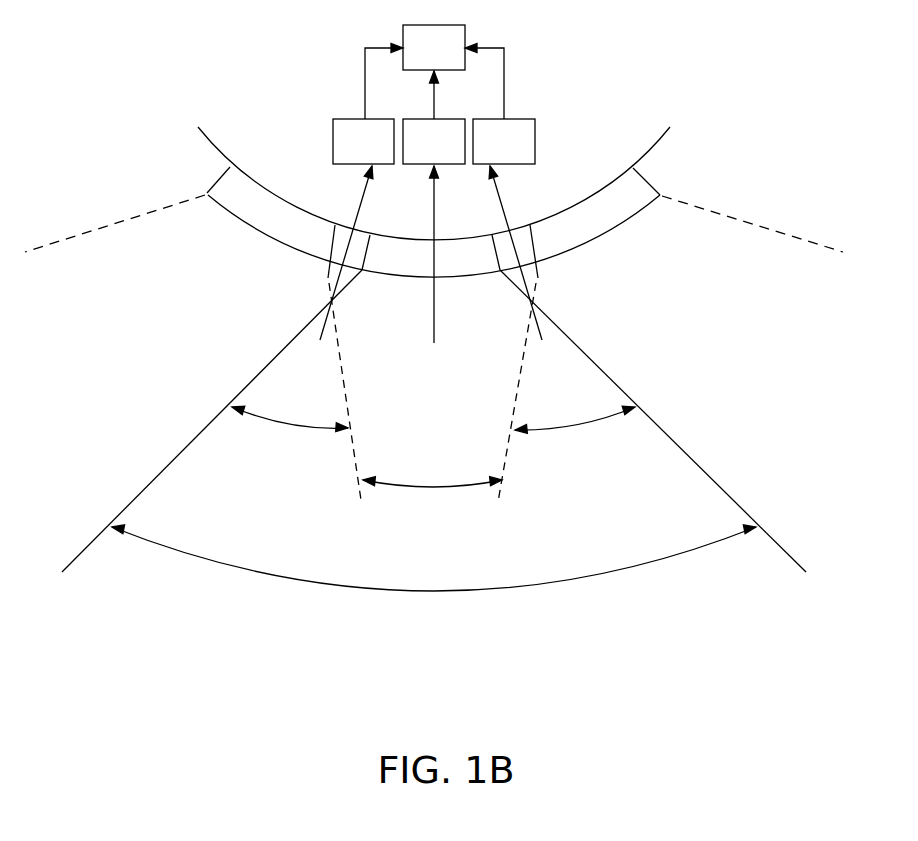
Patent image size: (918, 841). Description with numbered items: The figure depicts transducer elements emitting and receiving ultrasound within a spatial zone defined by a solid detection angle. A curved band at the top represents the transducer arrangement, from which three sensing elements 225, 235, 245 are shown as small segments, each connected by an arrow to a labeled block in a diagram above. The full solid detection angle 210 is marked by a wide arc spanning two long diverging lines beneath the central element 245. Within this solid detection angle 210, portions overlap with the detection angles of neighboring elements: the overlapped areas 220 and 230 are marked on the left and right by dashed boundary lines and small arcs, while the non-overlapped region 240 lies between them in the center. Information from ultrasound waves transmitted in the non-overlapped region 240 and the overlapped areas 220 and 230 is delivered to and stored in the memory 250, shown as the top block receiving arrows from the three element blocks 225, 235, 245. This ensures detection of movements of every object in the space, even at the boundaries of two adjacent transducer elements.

The solid detection angle 210 is at (441, 592).
The overlapped area 220 is at (288, 425).
The overlapped area 230 is at (568, 430).
The non-overlapped region 240 is at (432, 488).
The left image sensor 225 is at (347, 152).
The right image sensor 235 is at (486, 152).
The central image sensor 245 is at (416, 152).
The memory 250 is at (416, 59).